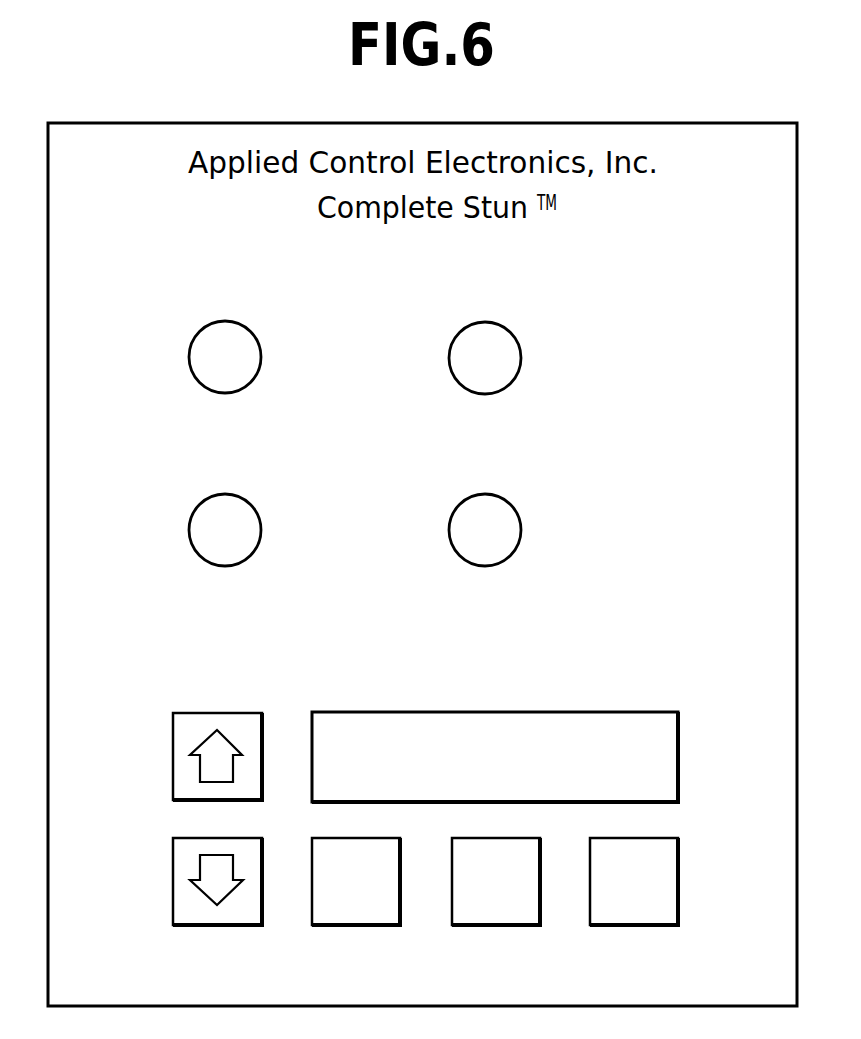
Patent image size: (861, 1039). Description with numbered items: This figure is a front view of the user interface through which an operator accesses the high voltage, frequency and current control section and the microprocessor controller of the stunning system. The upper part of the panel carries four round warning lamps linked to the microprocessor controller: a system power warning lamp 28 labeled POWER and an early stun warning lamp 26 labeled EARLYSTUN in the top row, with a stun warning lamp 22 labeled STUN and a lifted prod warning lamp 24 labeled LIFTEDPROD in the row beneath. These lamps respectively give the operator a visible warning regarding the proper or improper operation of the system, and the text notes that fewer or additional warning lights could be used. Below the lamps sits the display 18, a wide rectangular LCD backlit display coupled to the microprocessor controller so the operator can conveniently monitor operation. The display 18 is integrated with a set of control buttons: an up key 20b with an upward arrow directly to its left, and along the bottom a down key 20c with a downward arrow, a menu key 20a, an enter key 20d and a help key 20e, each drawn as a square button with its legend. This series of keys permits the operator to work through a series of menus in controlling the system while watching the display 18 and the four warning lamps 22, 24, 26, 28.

The display 18 is at (538, 723).
The menu key 20a is at (365, 913).
The up key 20b is at (182, 773).
The down key 20c is at (233, 913).
The enter key 20d is at (503, 913).
The help key 20e is at (635, 913).
The stun warning lamp 22 is at (198, 525).
The lifted prod warning lamp 24 is at (468, 525).
The early stun warning lamp 26 is at (468, 350).
The system power warning lamp 28 is at (200, 348).